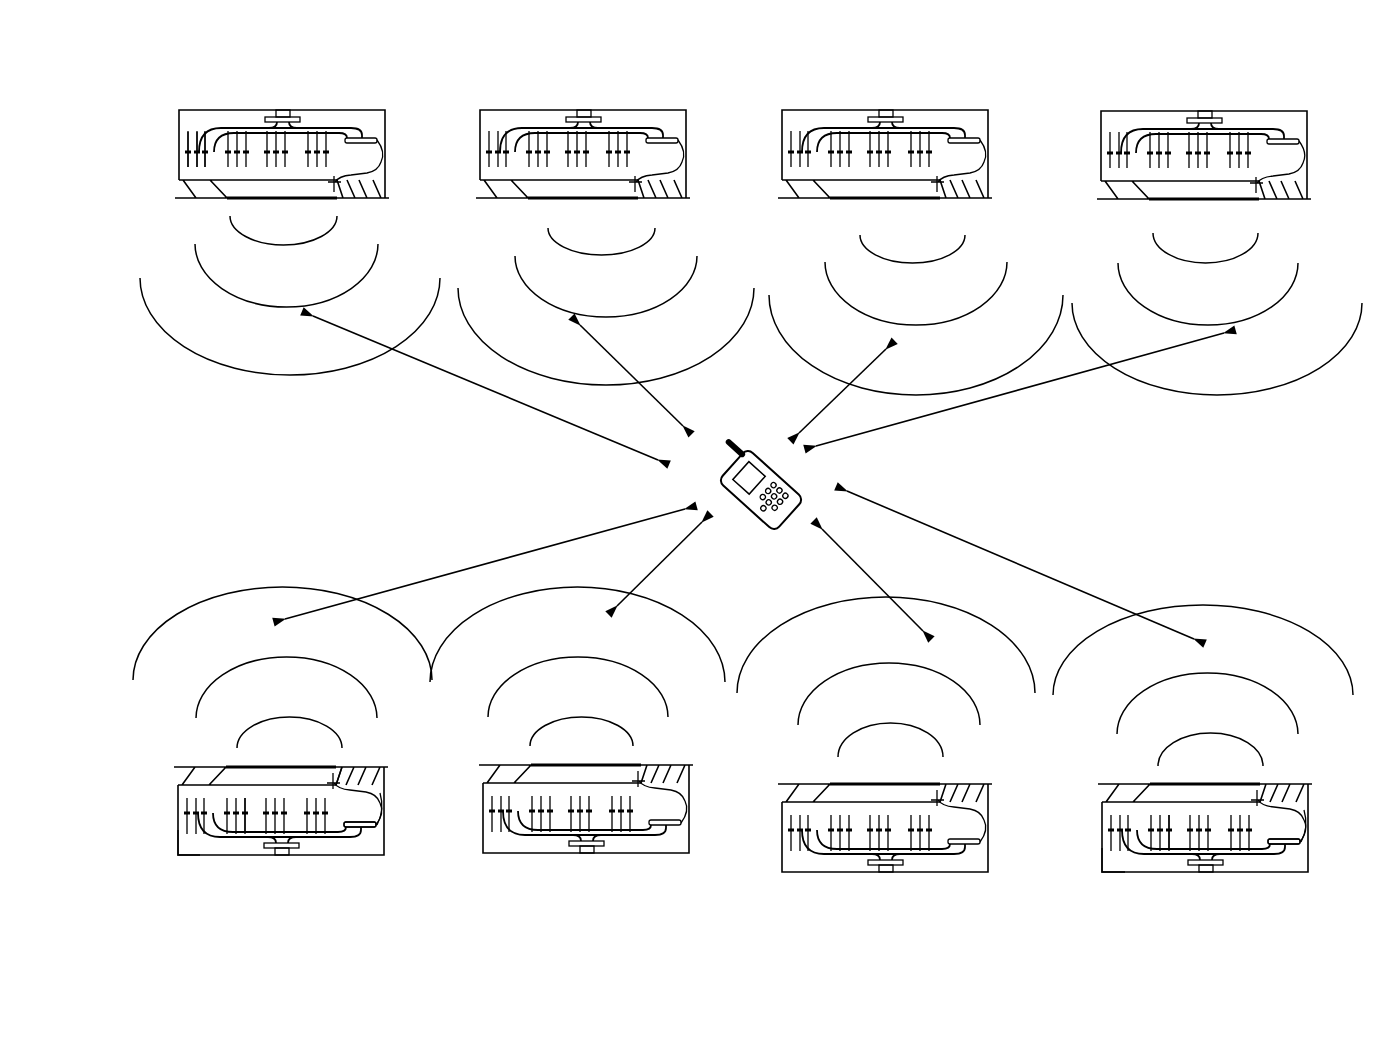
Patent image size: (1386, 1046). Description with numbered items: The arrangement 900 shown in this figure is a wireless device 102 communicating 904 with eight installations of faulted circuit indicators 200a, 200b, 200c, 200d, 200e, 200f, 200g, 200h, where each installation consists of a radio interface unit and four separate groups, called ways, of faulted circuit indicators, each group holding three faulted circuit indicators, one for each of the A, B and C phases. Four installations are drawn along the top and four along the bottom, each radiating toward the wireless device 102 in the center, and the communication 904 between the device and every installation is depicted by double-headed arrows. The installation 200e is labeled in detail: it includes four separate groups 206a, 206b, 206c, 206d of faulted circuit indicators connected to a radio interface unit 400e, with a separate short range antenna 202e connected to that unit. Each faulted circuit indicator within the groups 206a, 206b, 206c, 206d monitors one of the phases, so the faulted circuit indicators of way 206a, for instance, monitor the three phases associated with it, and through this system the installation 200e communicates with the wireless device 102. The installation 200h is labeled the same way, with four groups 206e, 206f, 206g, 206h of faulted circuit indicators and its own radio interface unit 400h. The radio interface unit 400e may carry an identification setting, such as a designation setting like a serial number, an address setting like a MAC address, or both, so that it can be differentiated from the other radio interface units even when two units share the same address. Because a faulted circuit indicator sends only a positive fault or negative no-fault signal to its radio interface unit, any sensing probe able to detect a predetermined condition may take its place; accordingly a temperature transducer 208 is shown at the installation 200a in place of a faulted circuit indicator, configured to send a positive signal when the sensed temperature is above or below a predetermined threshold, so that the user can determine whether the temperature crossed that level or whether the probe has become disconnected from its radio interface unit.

The lighting system 900 is at (1366, 66).
The installation of faulted circuit indicators 200a is at (196, 110).
The installation of faulted circuit indicators 200b is at (543, 110).
The installation of faulted circuit indicators 200c is at (816, 110).
The installation of faulted circuit indicators 200d is at (1130, 111).
The installation of faulted circuit indicators 200e is at (233, 855).
The installation of faulted circuit indicators 200f is at (535, 853).
The installation of faulted circuit indicators 200g is at (832, 872).
The installation of faulted circuit indicators 200h is at (1150, 872).
The temperature transducer 208 is at (188, 153).
The short range antenna 202e is at (330, 784).
The group of faulted circuit indicators 206a is at (178, 853).
The group of faulted circuit indicators 206b is at (247, 833).
The group of faulted circuit indicators 206c is at (320, 840).
The group of faulted circuit indicators 206d is at (360, 832).
The fixture housing end 206e is at (1102, 869).
The lamp 206f is at (1168, 845).
The wiring harness 206g is at (1240, 860).
The sensor lens 206h is at (1283, 848).
The radio interface unit 400e is at (386, 805).
The wireless transceiver 400h is at (1300, 832).
The communication 904 is at (890, 509).
The wireless device 102 is at (772, 535).